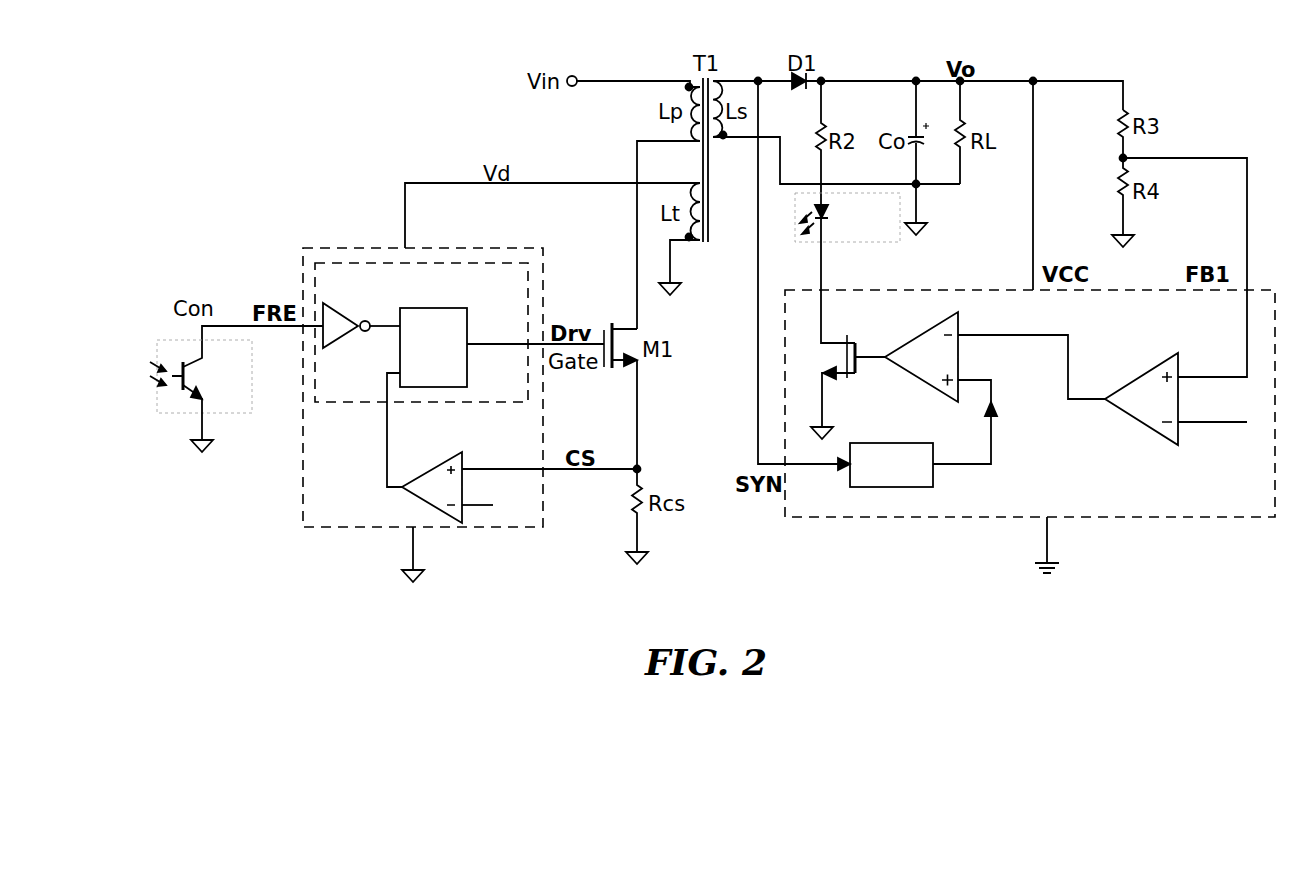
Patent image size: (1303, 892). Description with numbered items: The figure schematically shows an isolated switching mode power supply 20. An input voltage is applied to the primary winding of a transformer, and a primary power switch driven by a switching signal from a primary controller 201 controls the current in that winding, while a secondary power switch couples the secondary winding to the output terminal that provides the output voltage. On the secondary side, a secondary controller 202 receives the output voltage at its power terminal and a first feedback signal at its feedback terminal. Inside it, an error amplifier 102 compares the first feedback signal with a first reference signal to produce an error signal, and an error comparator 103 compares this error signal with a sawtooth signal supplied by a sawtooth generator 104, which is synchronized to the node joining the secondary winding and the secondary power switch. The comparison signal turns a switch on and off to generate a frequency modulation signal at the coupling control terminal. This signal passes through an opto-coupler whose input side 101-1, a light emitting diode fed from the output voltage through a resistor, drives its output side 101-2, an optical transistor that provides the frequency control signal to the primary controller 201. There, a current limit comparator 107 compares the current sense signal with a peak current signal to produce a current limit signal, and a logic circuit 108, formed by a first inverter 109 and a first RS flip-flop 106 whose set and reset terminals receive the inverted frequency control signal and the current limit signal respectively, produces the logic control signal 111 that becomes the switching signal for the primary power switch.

The isolated switching mode power supply 20 is at (285, 140).
The input side of the coupled device 101-1 is at (847, 268).
The output side of the coupled device 101-2 is at (201, 396).
The error amplifier 102 is at (1128, 387).
The error comparator 103 is at (915, 334).
The sawtooth generator 104 is at (895, 443).
The first RS flip-flop 106 is at (456, 294).
The current limit comparator 107 is at (425, 470).
The logic circuit 108 is at (370, 402).
The first inverter 109 is at (353, 294).
The logic control signal 111 is at (505, 331).
The primary controller 201 is at (318, 527).
The secondary controller 202 is at (892, 517).